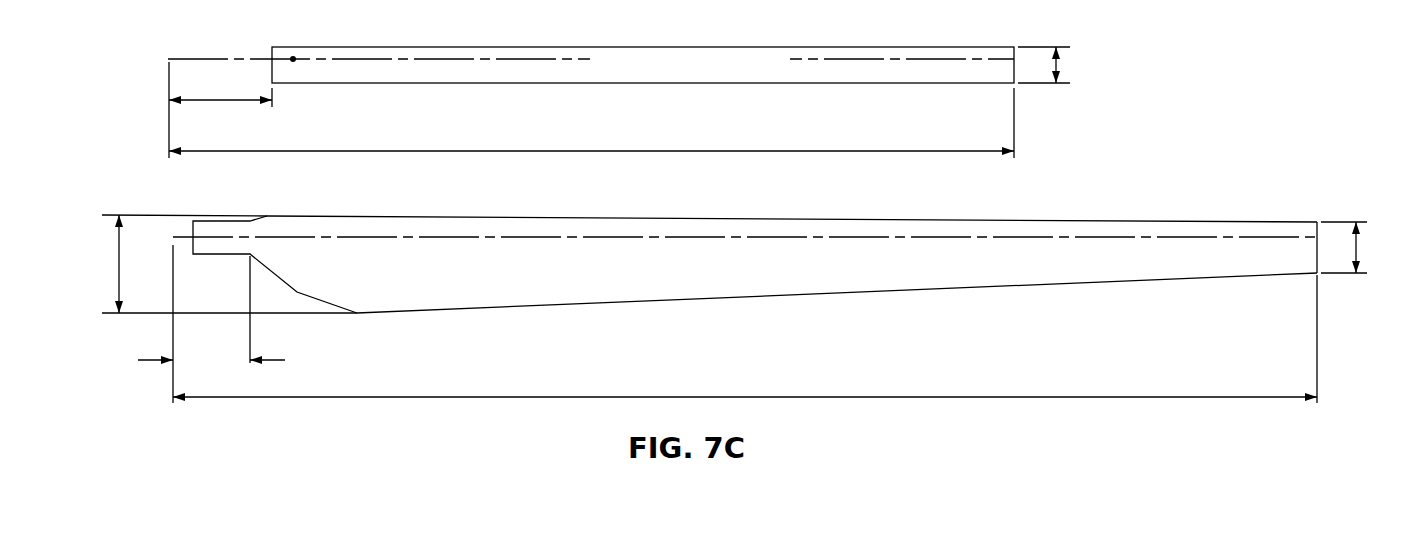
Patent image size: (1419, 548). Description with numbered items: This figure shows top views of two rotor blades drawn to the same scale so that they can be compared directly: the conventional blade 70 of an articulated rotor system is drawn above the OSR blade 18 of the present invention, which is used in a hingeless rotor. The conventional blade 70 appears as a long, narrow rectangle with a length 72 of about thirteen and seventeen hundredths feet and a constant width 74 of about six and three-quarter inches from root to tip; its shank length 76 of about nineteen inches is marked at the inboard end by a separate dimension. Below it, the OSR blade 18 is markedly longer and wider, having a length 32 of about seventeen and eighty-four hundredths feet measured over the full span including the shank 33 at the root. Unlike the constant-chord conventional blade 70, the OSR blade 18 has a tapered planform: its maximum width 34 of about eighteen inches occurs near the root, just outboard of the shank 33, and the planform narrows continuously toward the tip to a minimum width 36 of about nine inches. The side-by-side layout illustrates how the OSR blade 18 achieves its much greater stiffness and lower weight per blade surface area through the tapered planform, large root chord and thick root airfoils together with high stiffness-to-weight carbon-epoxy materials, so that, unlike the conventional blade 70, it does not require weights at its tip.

The conventional blade 70 is at (870, 60).
The length 72 is at (870, 150).
The constant width 74 is at (1060, 65).
The shank length 76 is at (218, 101).
The OSR blade 18 is at (1190, 265).
The shank 33 is at (223, 228).
The maximum width 34 is at (118, 271).
The minimum width 36 is at (1357, 248).
The length 32 is at (1005, 392).